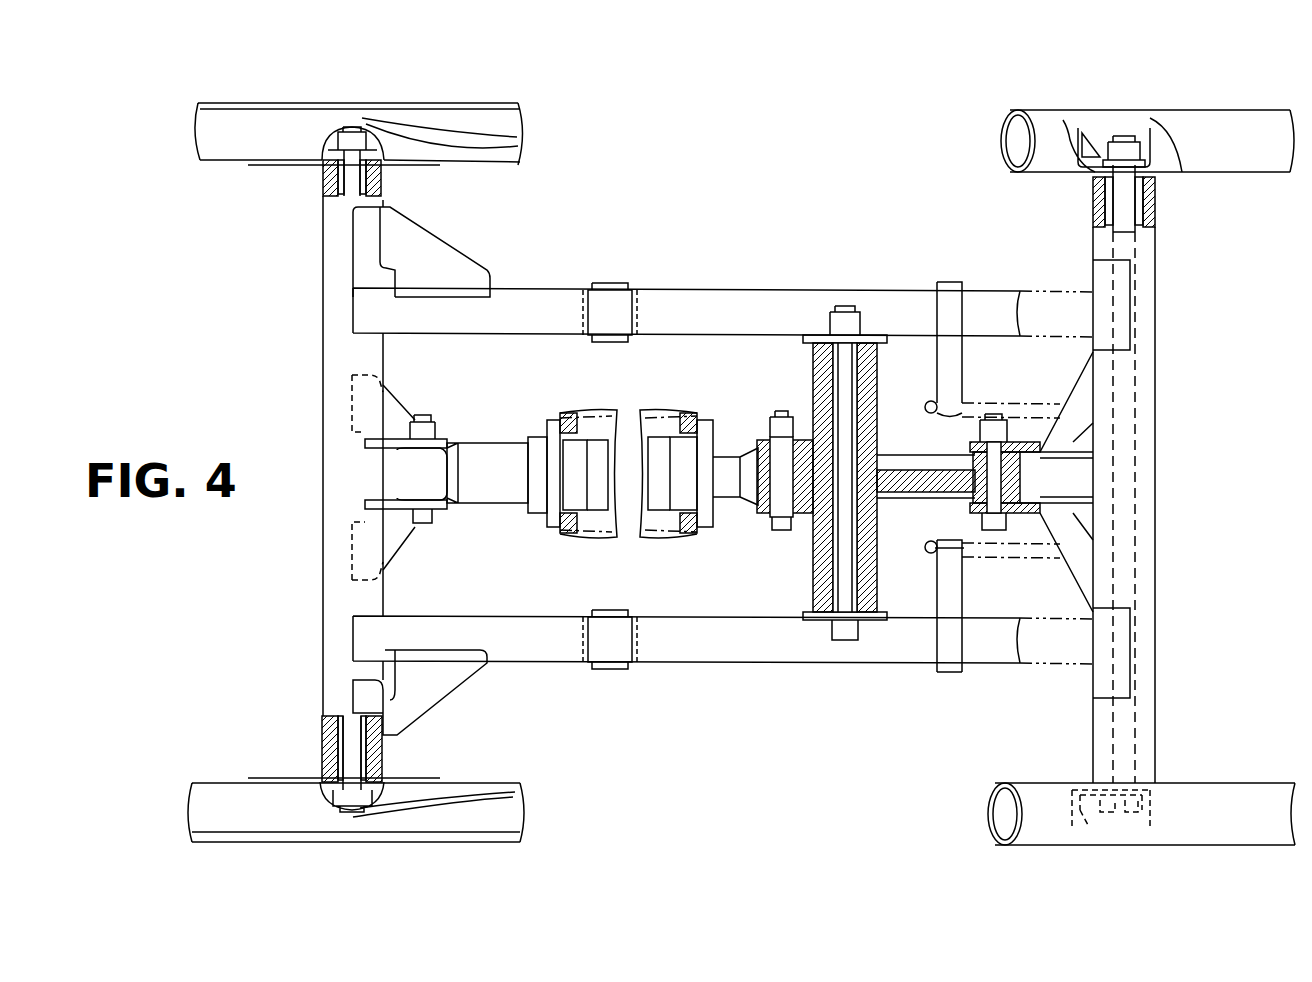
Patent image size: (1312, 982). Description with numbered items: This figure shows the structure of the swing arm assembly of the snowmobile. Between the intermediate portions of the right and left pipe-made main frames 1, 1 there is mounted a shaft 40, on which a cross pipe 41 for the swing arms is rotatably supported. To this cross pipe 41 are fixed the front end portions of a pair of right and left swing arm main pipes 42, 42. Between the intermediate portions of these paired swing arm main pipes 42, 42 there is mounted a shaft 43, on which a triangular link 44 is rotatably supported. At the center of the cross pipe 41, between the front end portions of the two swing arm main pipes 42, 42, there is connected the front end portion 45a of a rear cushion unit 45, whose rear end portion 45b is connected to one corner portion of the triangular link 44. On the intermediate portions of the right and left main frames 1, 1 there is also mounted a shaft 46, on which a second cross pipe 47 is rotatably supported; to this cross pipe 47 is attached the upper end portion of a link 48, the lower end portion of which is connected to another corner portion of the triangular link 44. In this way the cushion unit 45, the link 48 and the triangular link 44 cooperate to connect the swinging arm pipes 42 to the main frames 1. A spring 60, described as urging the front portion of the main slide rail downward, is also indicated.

The main frame 1 is at (495, 122).
The shaft 40 is at (325, 195).
The cross pipe 41 is at (330, 362).
The swing arm main pipe 42 is at (727, 300).
The shaft 43 is at (843, 348).
The triangular link 44 is at (913, 492).
The rear cushion unit 45 is at (562, 402).
The front end portion 45a is at (500, 498).
The rear end portion 45b is at (667, 530).
The shaft 46 is at (1128, 213).
The cross pipe 47 is at (1160, 442).
The link 48 is at (1080, 513).
The spring 60 is at (1000, 556).